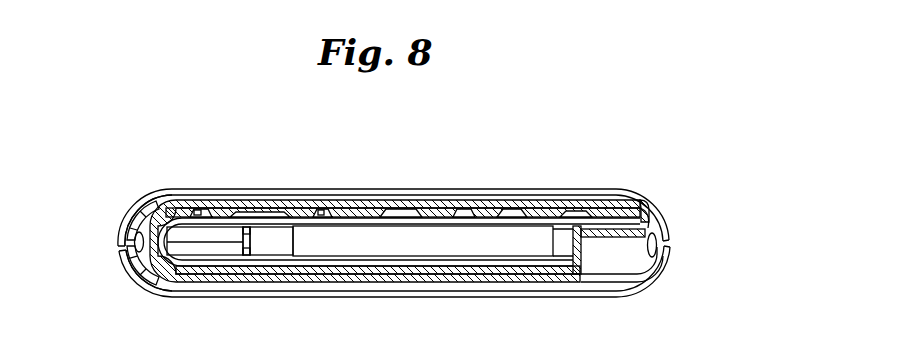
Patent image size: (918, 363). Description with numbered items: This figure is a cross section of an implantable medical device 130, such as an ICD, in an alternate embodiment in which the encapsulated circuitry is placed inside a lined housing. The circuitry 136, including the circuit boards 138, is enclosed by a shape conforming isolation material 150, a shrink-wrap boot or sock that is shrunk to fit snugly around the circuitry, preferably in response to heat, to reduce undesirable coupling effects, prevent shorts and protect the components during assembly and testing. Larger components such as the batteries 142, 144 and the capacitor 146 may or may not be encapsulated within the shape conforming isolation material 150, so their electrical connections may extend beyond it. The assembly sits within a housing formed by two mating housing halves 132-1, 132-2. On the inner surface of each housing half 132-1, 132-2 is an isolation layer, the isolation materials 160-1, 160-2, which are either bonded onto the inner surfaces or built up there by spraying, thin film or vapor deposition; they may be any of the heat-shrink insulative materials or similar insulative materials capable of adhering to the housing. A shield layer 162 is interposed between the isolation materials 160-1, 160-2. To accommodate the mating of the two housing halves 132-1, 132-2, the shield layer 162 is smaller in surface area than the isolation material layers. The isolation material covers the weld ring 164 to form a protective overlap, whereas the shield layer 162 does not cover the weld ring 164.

The implantable medical device 130 is at (507, 165).
The housing half 132-1 is at (656, 206).
The housing half 132-2 is at (645, 283).
The circuitry 136 is at (459, 195).
The circuit boards 138 is at (545, 206).
The battery 142 is at (212, 250).
The battery 144 is at (517, 248).
The capacitor 146 is at (281, 250).
The shape conforming isolation material 150 is at (293, 216).
The isolation material 160-1 is at (139, 210).
The isolation material 160-2 is at (140, 292).
The shield layer 162 is at (205, 206).
The weld ring 164 is at (130, 242).